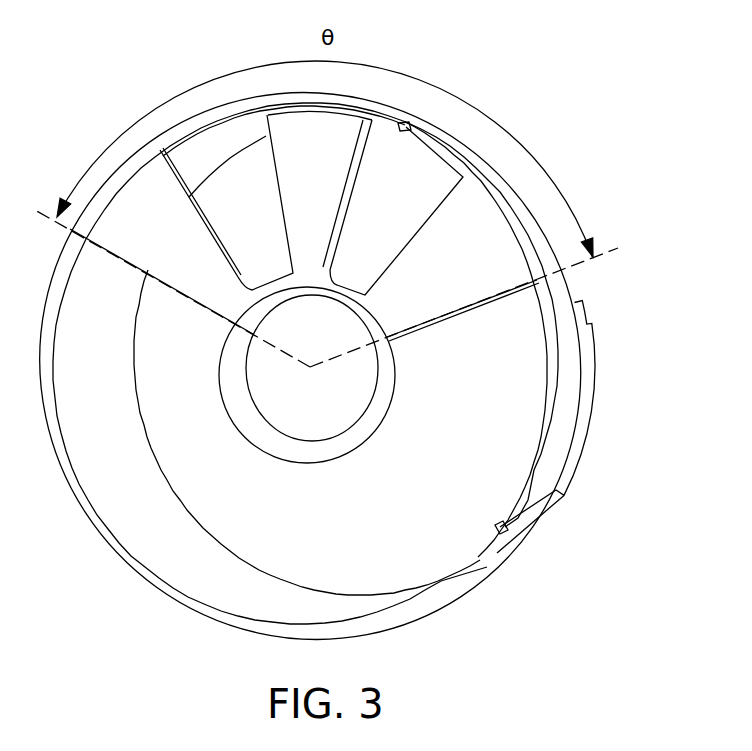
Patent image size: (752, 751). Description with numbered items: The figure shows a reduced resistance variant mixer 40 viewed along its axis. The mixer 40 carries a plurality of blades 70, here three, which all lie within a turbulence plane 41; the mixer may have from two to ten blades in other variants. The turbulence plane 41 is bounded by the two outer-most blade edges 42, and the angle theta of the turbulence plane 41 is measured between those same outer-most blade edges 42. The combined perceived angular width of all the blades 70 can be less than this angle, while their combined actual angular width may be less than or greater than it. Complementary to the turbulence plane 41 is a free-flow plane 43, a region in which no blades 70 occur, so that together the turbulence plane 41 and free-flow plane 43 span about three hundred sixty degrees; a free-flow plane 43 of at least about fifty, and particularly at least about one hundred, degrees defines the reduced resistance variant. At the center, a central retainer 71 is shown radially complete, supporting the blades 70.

The reduced resistance variant mixer 40 is at (634, 95).
The turbulence plane 41 is at (330, 335).
The outer-most blade edges 42 is at (182, 302).
The free-flow plane 43 is at (393, 551).
The blades 70 is at (190, 230).
The central retainer 71 is at (307, 449).